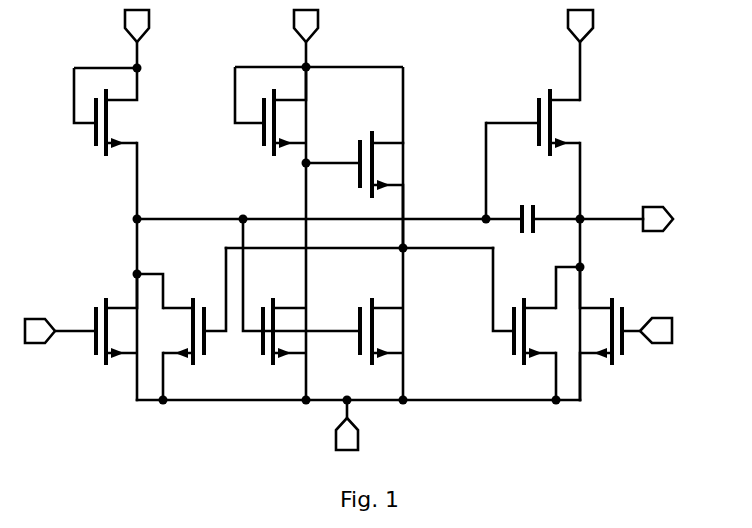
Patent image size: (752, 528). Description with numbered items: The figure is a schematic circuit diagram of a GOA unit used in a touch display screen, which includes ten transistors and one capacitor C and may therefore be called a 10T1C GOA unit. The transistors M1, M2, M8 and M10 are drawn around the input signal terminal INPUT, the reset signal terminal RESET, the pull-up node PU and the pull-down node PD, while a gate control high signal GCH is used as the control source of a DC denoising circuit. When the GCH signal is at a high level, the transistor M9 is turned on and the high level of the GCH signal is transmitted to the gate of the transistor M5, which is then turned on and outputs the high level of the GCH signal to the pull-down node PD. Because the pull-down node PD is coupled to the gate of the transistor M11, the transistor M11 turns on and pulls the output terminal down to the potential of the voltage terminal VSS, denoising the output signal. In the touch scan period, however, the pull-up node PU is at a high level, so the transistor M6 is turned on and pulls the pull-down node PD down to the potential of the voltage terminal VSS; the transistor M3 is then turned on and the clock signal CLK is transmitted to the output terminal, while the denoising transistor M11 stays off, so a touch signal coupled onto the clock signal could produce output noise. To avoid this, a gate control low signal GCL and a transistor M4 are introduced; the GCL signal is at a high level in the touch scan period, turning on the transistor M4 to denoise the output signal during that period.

The transistor M1 is at (107, 112).
The transistor M2 is at (118, 319).
The transistor M3 is at (536, 122).
The transistor M4 is at (601, 331).
The transistor M5 is at (355, 157).
The transistor M6 is at (382, 331).
The transistor M8 is at (284, 331).
The transistor M9 is at (319, 111).
The transistor M10 is at (179, 331).
The transistor M11 is at (540, 331).
The capacitor C is at (527, 209).
The input signal terminal INPUT is at (81, 22).
The gate control high signal GCH is at (266, 20).
The clock signal CLK is at (543, 20).
The reset signal terminal RESET is at (37, 306).
The gate control low signal GCL is at (656, 306).
The voltage terminal VSS is at (385, 439).
The pull-up node PU is at (107, 217).
The pull-down node PD is at (382, 245).